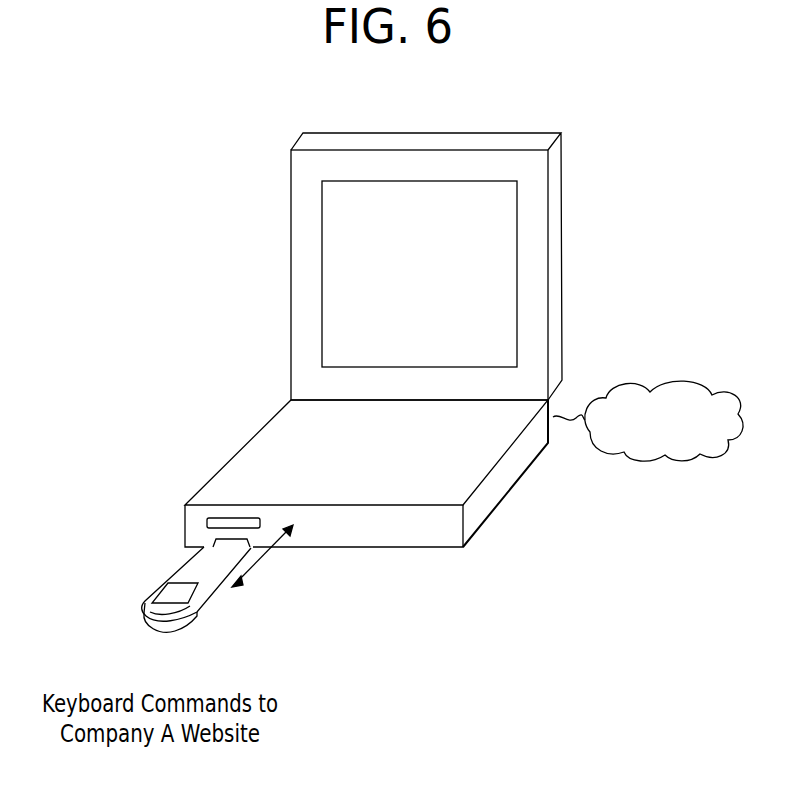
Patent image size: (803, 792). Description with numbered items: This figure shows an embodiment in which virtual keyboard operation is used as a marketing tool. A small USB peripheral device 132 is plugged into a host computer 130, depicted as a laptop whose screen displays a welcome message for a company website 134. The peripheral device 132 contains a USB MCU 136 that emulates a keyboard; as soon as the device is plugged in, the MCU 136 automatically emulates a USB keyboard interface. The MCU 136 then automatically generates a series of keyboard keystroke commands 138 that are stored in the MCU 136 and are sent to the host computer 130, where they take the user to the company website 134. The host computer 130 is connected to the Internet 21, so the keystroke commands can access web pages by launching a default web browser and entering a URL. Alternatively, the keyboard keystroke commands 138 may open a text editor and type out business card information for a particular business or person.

The host computer 130 is at (238, 452).
The USB peripheral device 132 is at (163, 581).
The company website 134 is at (321, 247).
The USB MCU 136 is at (202, 603).
The keyboard keystroke commands 138 is at (170, 604).
The Internet 21 is at (640, 458).